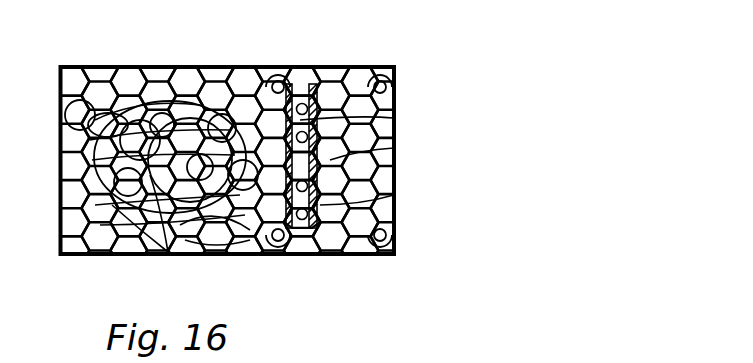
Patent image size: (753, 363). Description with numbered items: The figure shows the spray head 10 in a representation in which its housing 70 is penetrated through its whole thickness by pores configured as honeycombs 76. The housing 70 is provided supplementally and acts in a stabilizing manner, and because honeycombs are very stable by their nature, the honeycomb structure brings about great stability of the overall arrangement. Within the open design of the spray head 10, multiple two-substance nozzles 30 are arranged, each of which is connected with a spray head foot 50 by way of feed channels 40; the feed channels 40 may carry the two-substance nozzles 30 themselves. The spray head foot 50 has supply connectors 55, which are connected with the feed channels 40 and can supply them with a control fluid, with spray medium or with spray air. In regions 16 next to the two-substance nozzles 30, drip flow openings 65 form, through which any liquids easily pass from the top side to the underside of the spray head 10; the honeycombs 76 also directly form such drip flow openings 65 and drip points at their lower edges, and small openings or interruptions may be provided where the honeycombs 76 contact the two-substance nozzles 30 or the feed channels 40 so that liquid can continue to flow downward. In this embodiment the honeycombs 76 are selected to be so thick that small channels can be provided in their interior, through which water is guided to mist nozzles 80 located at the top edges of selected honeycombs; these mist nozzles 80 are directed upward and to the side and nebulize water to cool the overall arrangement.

The spray head 10 is at (369, 274).
The regions 16 is at (106, 214).
The two-substance nozzles 30 is at (138, 108).
The feed channels 40 is at (121, 212).
The spray head foot 50 is at (318, 225).
The supply connectors 55 is at (309, 138).
The drip flow openings 65 is at (238, 100).
The housing 70 is at (162, 100).
The honeycombs 76 is at (244, 238).
The mist nozzles 80 is at (80, 105).